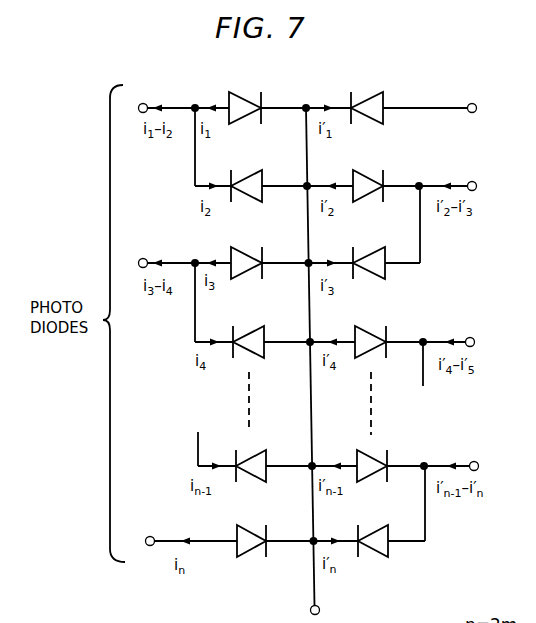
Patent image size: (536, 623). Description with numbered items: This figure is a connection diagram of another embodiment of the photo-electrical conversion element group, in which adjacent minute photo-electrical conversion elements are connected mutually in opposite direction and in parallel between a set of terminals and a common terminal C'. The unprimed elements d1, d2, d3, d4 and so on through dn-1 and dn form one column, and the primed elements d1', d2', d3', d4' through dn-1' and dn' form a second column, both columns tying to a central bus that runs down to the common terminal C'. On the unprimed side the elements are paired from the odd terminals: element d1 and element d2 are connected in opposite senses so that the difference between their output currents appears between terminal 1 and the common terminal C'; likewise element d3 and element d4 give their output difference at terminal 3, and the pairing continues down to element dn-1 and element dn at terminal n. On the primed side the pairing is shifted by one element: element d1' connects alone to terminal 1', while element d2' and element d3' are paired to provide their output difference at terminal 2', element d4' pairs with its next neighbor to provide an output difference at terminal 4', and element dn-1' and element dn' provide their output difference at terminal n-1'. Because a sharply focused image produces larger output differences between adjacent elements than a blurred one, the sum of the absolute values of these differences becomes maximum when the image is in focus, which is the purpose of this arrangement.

The terminal 1 is at (133, 108).
The terminal 1' is at (482, 107).
The terminal 2' is at (482, 185).
The terminal 3 is at (133, 263).
The terminal 4' is at (481, 342).
The terminal n-1' is at (493, 466).
The terminal n is at (139, 542).
The common terminal C' is at (329, 607).
The minute photo-electrical conversion element d1 is at (260, 96).
The minute photo-electrical conversion element d1' is at (385, 96).
The minute photo-electrical conversion element d2 is at (259, 174).
The minute photo-electrical conversion element d2' is at (386, 174).
The minute photo-electrical conversion element d3 is at (259, 253).
The minute photo-electrical conversion element d3' is at (383, 253).
The minute photo-electrical conversion element d4 is at (260, 331).
The minute photo-electrical conversion element d4' is at (383, 331).
The minute photo-electrical conversion element dn-1 is at (264, 452).
The minute photo-electrical conversion element dn-1' is at (394, 452).
The minute photo-electrical conversion element dn is at (264, 531).
The minute photo-electrical conversion element dn' is at (386, 531).